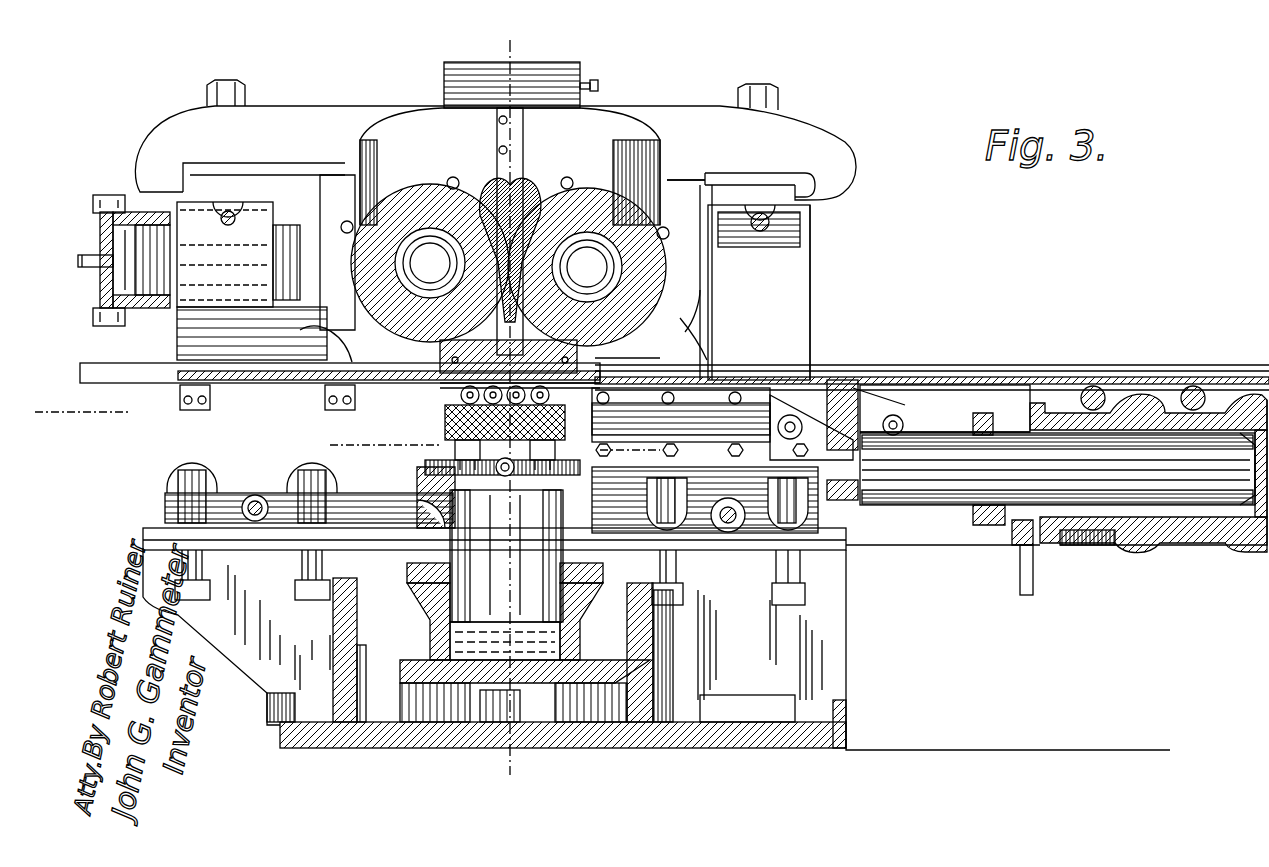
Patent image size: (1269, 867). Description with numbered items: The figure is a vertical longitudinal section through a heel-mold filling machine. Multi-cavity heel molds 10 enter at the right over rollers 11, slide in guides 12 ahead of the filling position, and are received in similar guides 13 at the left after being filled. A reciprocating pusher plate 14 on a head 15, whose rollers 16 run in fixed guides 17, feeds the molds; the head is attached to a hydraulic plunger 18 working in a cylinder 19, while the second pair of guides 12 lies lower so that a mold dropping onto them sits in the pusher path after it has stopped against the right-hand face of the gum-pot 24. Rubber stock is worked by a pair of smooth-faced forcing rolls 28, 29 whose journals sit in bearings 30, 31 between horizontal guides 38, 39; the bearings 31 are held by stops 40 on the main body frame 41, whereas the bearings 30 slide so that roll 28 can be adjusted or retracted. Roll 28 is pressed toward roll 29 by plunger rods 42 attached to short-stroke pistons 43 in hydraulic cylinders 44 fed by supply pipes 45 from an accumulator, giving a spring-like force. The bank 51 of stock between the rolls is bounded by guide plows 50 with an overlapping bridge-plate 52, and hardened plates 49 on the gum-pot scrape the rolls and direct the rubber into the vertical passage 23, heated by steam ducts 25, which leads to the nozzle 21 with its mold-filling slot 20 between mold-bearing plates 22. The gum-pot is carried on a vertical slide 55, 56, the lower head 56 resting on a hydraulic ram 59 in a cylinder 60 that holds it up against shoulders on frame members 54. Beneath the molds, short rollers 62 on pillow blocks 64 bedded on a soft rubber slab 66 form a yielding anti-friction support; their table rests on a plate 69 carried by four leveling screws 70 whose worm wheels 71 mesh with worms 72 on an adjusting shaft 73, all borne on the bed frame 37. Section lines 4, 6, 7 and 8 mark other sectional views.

The section line 4 is at (95, 428).
The section line 6 is at (625, 472).
The section line 7 is at (496, 770).
The section line 8 is at (830, 623).
The multi-cavity heel molds 10 is at (1163, 372).
The rollers 11 is at (1195, 386).
The guides 12 is at (935, 372).
The guides 13 is at (150, 385).
The pusher plate 14 is at (758, 385).
The head 15 is at (853, 388).
The rollers 16 is at (925, 385).
The fixed guides 17 is at (770, 470).
The hydraulic plunger 18 is at (1085, 552).
The cylinder 19 is at (1195, 552).
The mold-filling slot 20 is at (460, 398).
The die or nozzle 21 is at (577, 362).
The mold-bearing plates 22 is at (605, 372).
The vertical cavity or passage 23 is at (440, 352).
The gum-pot 24 is at (650, 300).
The steam ducts 25 is at (325, 402).
The forcing roll 28 is at (365, 292).
The forcing roll 29 is at (700, 280).
The bearings 30 is at (335, 215).
The bearings 31 is at (683, 228).
The bed frame 37 is at (800, 682).
The horizontal guides 38 is at (315, 380).
The horizontal guides 39 is at (350, 160).
The stops 40 is at (800, 260).
The main body frame 41 is at (805, 215).
The plunger rods 42 is at (268, 210).
The short-stroke pistons 43 is at (150, 225).
The hydraulic cylinders 44 is at (122, 212).
The supply pipes 45 is at (90, 255).
The hardened plates 49 is at (660, 278).
The guide plows or deflectors 50 is at (615, 145).
The bank of rubber stock 51 is at (490, 185).
The bridge-plate 52 is at (522, 140).
The frame members 54 is at (582, 80).
The vertically-movable frame or slide 55 is at (455, 452).
The slide member or head 56 is at (430, 535).
The hydraulic ram or plunger 59 is at (430, 600).
The cylinder 60 is at (430, 636).
The short rollers 62 is at (770, 395).
The pillow blocks 64 is at (612, 400).
The slab of soft rubber 66 is at (445, 420).
The plate 69 is at (655, 435).
The leveling screws 70 is at (425, 465).
The worm wheels 71 is at (600, 535).
The worms 72 is at (440, 548).
The adjusting shaft 73 is at (500, 520).